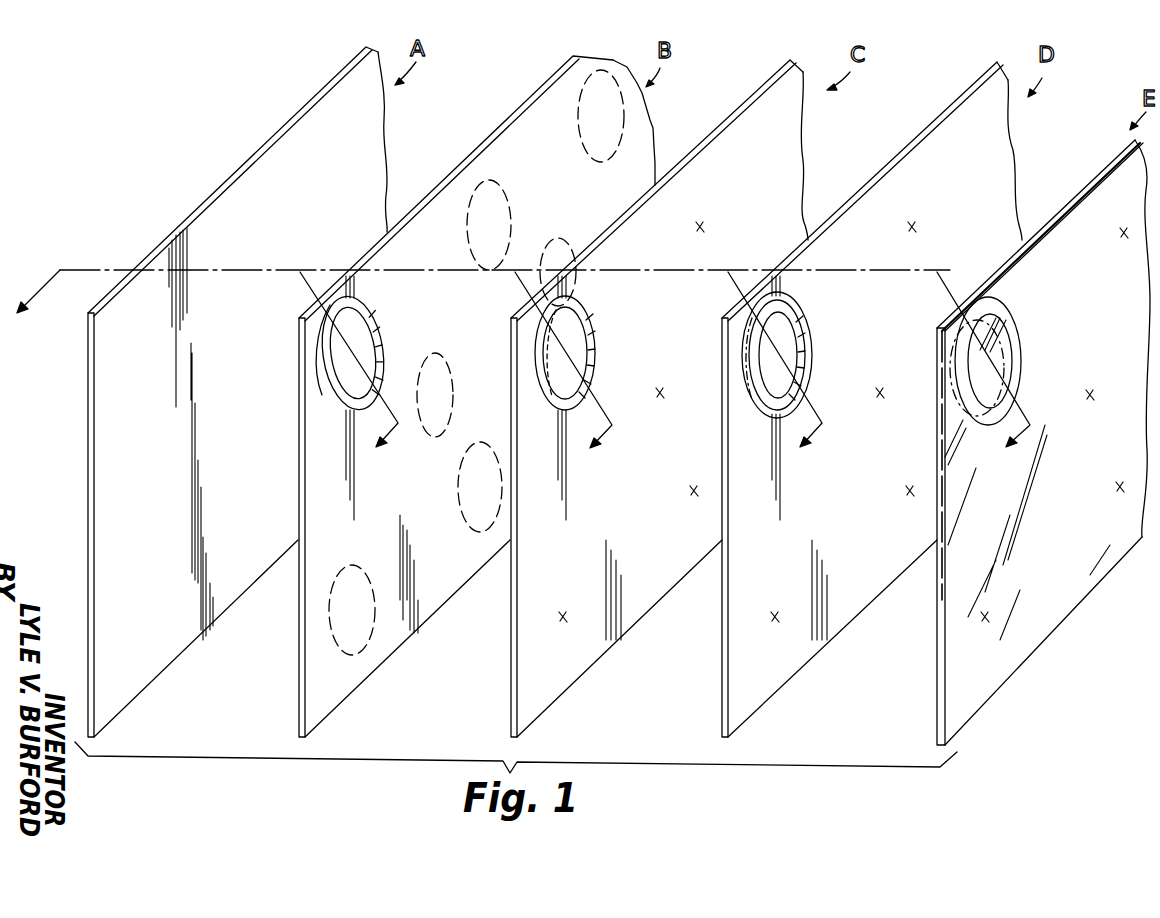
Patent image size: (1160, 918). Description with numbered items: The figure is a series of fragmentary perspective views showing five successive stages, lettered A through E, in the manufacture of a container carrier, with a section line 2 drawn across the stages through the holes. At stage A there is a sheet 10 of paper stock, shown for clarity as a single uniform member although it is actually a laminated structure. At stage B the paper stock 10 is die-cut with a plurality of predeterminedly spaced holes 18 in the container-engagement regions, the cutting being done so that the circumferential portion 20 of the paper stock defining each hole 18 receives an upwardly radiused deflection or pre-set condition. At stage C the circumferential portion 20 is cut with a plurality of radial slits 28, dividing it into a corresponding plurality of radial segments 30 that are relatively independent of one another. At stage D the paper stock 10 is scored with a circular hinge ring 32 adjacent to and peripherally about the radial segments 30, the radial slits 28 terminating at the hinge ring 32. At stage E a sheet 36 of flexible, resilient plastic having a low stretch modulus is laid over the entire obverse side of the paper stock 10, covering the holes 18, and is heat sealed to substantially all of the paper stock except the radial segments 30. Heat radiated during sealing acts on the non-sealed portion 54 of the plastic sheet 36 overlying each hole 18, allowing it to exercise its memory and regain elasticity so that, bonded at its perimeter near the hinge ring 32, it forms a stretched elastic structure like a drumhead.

The section line 2- 2 is at (516, 374).
The sheet of paper stock 10 is at (86, 398).
The holes 18 is at (362, 340).
The circumferential portion 20 is at (343, 394).
The radial slits 28 is at (583, 312).
The radial segments 30 is at (595, 348).
The circular hinge ring 32 is at (768, 412).
The sheet of flexible and resilient plastic 36 is at (944, 584).
The non-sealed portion of the plastic sheet 54 is at (1008, 350).